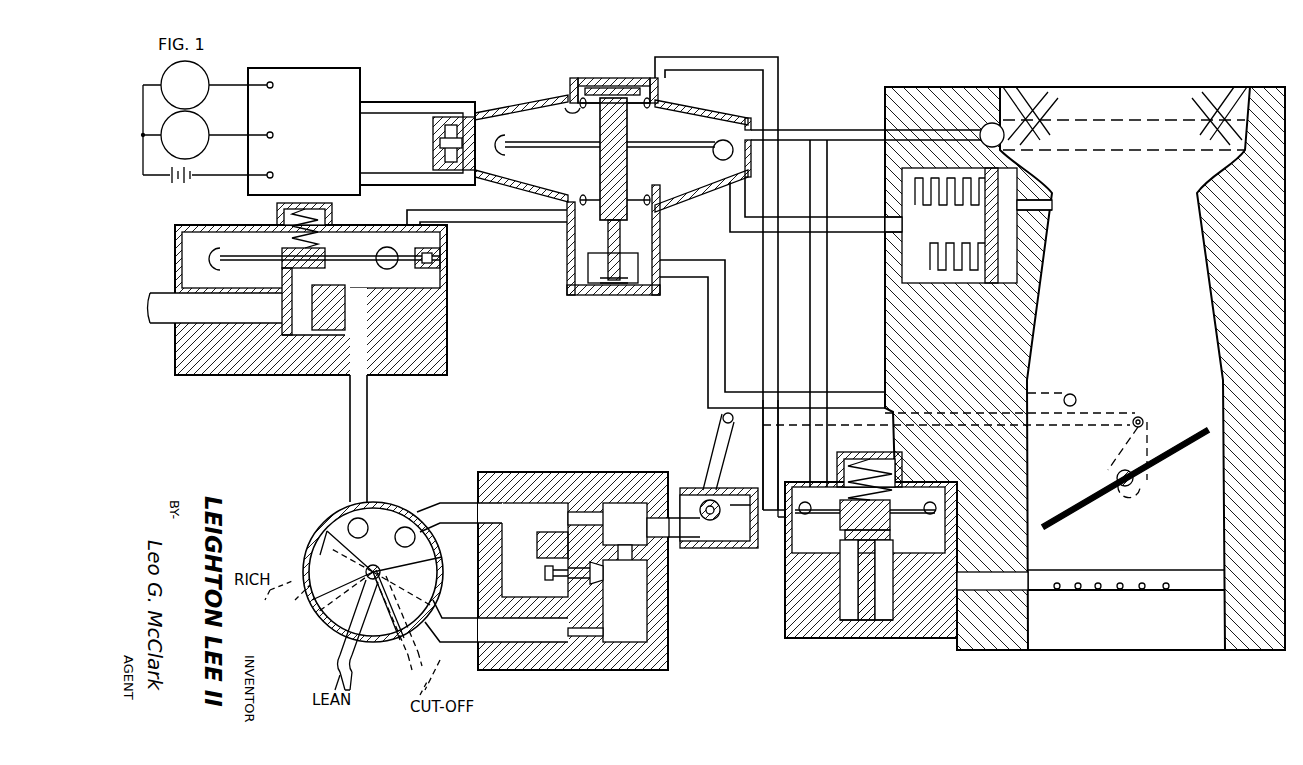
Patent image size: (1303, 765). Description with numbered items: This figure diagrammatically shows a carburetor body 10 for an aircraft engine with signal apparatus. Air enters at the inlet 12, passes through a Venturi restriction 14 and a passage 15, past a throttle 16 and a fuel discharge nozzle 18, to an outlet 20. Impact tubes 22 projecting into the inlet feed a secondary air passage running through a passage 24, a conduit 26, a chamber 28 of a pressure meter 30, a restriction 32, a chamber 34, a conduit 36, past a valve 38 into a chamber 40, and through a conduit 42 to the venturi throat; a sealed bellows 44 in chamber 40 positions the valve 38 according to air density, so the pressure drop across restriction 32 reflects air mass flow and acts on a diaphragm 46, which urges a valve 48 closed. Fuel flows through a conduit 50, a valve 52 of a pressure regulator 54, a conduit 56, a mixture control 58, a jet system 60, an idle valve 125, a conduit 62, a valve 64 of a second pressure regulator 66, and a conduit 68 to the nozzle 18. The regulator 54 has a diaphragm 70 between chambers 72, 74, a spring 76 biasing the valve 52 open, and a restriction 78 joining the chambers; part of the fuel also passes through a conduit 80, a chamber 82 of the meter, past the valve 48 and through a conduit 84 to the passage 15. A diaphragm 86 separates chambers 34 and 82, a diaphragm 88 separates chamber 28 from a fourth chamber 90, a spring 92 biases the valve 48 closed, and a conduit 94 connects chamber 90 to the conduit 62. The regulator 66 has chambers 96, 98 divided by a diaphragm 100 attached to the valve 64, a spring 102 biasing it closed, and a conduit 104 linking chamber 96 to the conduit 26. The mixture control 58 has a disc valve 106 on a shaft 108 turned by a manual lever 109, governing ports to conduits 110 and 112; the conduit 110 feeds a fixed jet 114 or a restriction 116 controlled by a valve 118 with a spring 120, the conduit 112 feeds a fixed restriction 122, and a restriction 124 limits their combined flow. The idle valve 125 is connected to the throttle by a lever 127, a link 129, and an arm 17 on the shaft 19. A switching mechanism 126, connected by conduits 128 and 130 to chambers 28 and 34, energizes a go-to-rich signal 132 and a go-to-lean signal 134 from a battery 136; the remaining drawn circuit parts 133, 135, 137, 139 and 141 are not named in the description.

The carburetor body 10 is at (880, 318).
The inlet 12 is at (1115, 109).
The Venturi restriction 14 is at (1197, 193).
The passage 15 is at (1140, 376).
The throttle 16 is at (1168, 445).
The arm 17 is at (1100, 455).
The fuel discharge nozzle 18 is at (1185, 570).
The shaft 19 is at (1130, 485).
The outlet 20 is at (1118, 630).
The impact tubes 22 is at (1040, 95).
The passage 24 is at (980, 123).
The conduit 26 is at (848, 120).
The chamber 28 is at (554, 135).
The pressure meter 30 is at (529, 64).
The restriction 32 is at (433, 145).
The chamber 34 is at (554, 173).
The conduit 36 is at (715, 223).
The valve 38 is at (890, 220).
The chamber 40 is at (927, 188).
The conduit 42 is at (1040, 205).
The sealed bellows 44 is at (963, 245).
The diaphragm 46 is at (715, 160).
The valve 48 is at (590, 268).
The conduit 50 is at (165, 323).
The valve 52 is at (287, 340).
The pressure regulator 54 is at (460, 342).
The conduit 56 is at (368, 425).
The mixture control 58 is at (327, 496).
The jet system 60 is at (590, 670).
The conduit 62 is at (685, 488).
The valve 64 is at (865, 620).
The second pressure regulator 66 is at (780, 599).
The conduit 68 is at (985, 600).
The diaphragm 70 is at (220, 233).
The expansible chamber 72 is at (252, 251).
The expansible chamber 74 is at (250, 281).
The spring 76 is at (320, 216).
The restriction 78 is at (440, 262).
The conduit 80 is at (500, 222).
The chamber 82 is at (595, 229).
The conduit 84 is at (708, 340).
The diaphragm 86 is at (596, 186).
The diaphragm 88 is at (577, 112).
The fourth expansible chamber 90 is at (575, 75).
The spring 92 is at (630, 88).
The conduit 94 is at (730, 55).
The expansible chamber 96 is at (900, 490).
The expansible chamber 98 is at (868, 521).
The flexible diaphragm 100 is at (930, 530).
The spring 102 is at (860, 458).
The conduit 104 is at (828, 358).
The disc valve 106 is at (390, 648).
The shaft 108 is at (452, 560).
The manually operable lever 109 is at (358, 660).
The conduit 110 is at (452, 498).
The conduit 112 is at (418, 634).
The fixed restriction or jet 114 is at (585, 512).
The restriction 116 is at (593, 582).
The valve 118 is at (603, 574).
The spring 120 is at (553, 580).
The fixed restriction 122 is at (590, 632).
The restriction 124 is at (628, 556).
The idle valve 125 is at (700, 520).
The switching mechanism 126 is at (322, 106).
The lever 127 is at (720, 430).
The conduit 128 is at (388, 103).
The link 129 is at (797, 440).
The conduit 130 is at (382, 162).
The signal 132 is at (209, 92).
The conductor 133 is at (140, 82).
The signal 134 is at (205, 150).
The conductor 135 is at (225, 80).
The battery 136 is at (200, 180).
The conductor 137 is at (248, 180).
The junction 139 is at (155, 122).
The conductor 141 is at (222, 130).